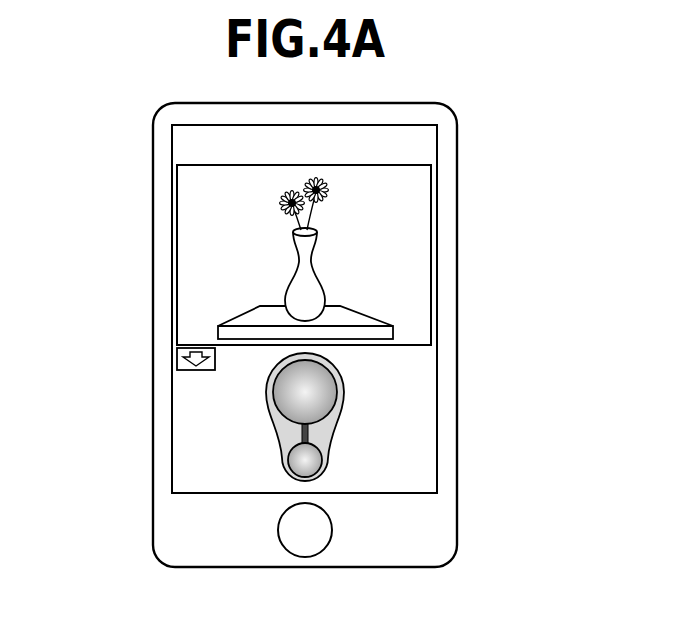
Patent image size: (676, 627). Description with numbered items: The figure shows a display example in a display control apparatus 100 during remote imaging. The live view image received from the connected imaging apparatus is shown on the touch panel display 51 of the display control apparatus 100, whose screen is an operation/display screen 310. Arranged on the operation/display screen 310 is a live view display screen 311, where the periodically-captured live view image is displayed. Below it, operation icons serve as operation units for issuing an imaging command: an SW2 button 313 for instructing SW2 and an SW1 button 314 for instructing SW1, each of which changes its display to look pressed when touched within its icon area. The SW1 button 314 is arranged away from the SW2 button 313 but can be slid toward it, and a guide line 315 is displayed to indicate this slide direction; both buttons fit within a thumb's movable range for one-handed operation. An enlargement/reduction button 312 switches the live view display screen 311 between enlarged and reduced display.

The display control apparatus 100 is at (458, 214).
The touch panel display 51 is at (418, 148).
The operation/display screen 310 is at (188, 440).
The live view display screen 311 is at (188, 262).
The enlargement/reduction button 312 is at (177, 364).
The SW2 button 313 is at (337, 387).
The SW1 button 314 is at (320, 458).
The guide line 315 is at (310, 430).